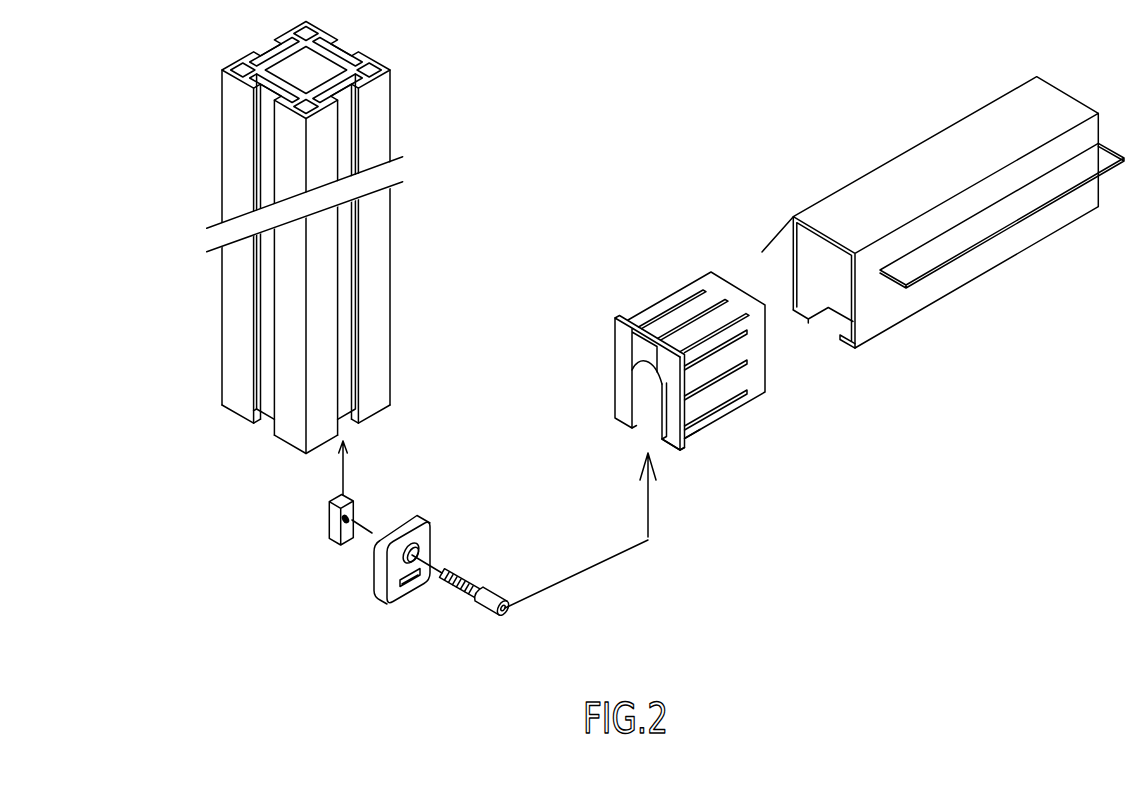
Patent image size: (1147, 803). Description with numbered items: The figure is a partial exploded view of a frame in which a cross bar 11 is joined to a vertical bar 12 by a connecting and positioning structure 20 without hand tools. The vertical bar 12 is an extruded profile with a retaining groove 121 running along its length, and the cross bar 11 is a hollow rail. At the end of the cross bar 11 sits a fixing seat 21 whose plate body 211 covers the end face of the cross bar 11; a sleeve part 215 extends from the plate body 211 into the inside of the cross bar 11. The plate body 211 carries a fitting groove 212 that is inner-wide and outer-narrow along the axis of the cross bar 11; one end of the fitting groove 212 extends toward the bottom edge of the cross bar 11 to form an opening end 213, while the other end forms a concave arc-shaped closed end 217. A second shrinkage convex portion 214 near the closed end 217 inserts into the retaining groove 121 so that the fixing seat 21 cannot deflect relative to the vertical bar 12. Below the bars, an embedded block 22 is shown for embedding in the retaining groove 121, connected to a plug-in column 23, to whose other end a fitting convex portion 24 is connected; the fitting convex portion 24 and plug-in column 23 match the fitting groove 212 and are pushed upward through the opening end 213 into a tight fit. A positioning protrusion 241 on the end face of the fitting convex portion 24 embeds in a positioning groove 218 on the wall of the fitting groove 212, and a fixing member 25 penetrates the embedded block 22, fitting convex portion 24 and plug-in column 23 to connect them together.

The cross bar 11 is at (957, 145).
The vertical bar 12 is at (231, 259).
The retaining groove 121 is at (345, 373).
The connecting and positioning structure 20 is at (323, 598).
The fixing seat 21 is at (663, 418).
The plate body 211 is at (673, 421).
The fitting groove 212 is at (666, 440).
The opening end 213 is at (642, 423).
The second shrinkage convex portion 214 is at (640, 353).
The sleeve part 215 is at (697, 301).
The closed end 217 is at (630, 380).
The positioning groove 218 is at (682, 388).
The embedded block 22 is at (332, 533).
The plug-in column 23 is at (372, 565).
The fitting convex portion 24 is at (382, 609).
The positioning protrusion 241 is at (418, 585).
The fixing member 25 is at (473, 580).